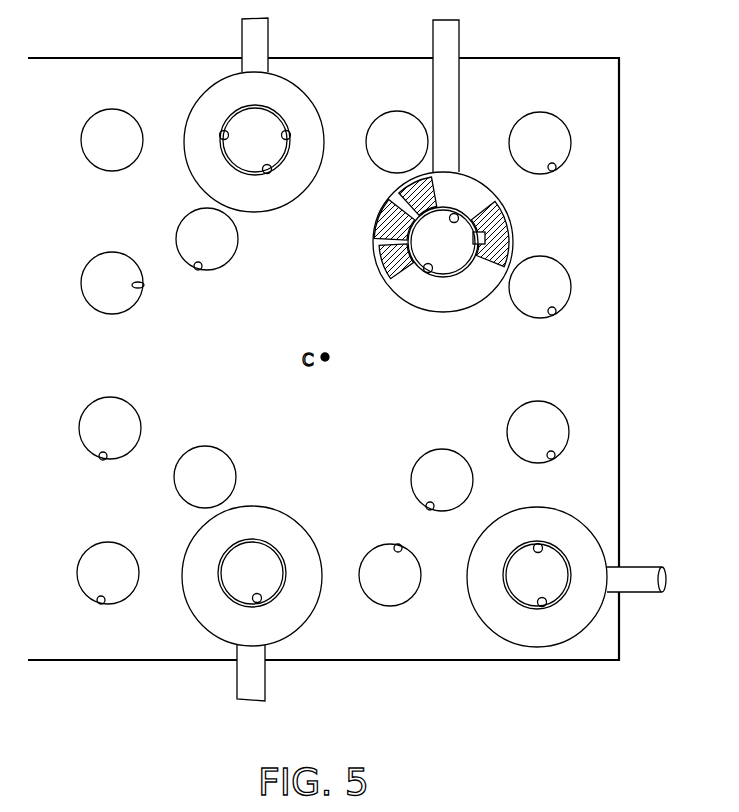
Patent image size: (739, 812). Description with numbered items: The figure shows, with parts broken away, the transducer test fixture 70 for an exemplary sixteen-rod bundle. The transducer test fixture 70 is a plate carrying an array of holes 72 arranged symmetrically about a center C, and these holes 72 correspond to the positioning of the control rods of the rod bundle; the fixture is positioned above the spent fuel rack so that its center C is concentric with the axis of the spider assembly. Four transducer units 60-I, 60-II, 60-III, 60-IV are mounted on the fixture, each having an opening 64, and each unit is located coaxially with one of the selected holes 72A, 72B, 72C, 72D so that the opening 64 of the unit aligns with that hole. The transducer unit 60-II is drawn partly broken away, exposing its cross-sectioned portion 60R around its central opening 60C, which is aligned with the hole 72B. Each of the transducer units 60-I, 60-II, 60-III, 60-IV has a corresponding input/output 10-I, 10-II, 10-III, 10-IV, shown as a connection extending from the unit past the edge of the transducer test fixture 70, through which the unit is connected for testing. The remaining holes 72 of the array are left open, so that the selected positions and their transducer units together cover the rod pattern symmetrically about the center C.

The transducer test fixture 70 is at (373, 661).
The input/output 10-I is at (270, 42).
The input/output 10-II is at (461, 40).
The input/output 10-III is at (633, 580).
The input/output 10-IV is at (237, 684).
The transducer unit 60-I is at (192, 175).
The transducer unit 60-II is at (420, 260).
The transducer unit 60-III is at (506, 564).
The transducer unit 60-IV is at (261, 561).
The coupling ring 60R is at (407, 240).
The coupling center bore 60C is at (473, 236).
The opening 64 is at (288, 139).
The holes 72 is at (555, 168).
The hole 72A is at (271, 174).
The hole 72B is at (456, 214).
The hole 72C is at (538, 606).
The hole 72D is at (255, 603).